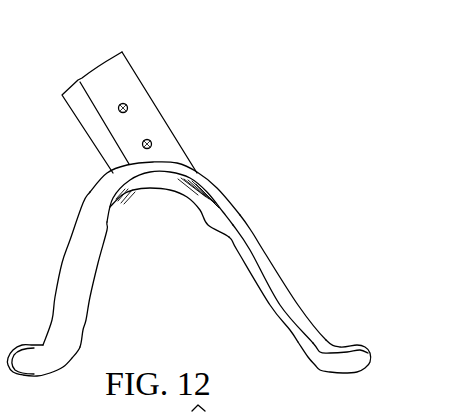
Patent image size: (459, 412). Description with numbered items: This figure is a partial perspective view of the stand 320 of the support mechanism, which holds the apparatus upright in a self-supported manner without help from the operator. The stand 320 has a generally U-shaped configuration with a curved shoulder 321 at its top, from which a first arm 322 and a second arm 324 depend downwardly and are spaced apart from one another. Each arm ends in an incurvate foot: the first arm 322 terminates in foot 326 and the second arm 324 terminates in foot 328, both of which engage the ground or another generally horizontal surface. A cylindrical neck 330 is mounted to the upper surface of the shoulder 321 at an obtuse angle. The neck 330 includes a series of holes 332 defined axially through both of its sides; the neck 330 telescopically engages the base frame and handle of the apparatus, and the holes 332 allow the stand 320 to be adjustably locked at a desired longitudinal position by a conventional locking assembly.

The stand 320 is at (227, 197).
The curved shoulder 321 is at (170, 163).
The first arm 322 is at (67, 243).
The second arm 324 is at (253, 232).
The incurvate foot 326 is at (43, 363).
The incurvate foot 328 is at (347, 367).
The cylindrical neck 330 is at (147, 85).
The hole 332 is at (150, 140).